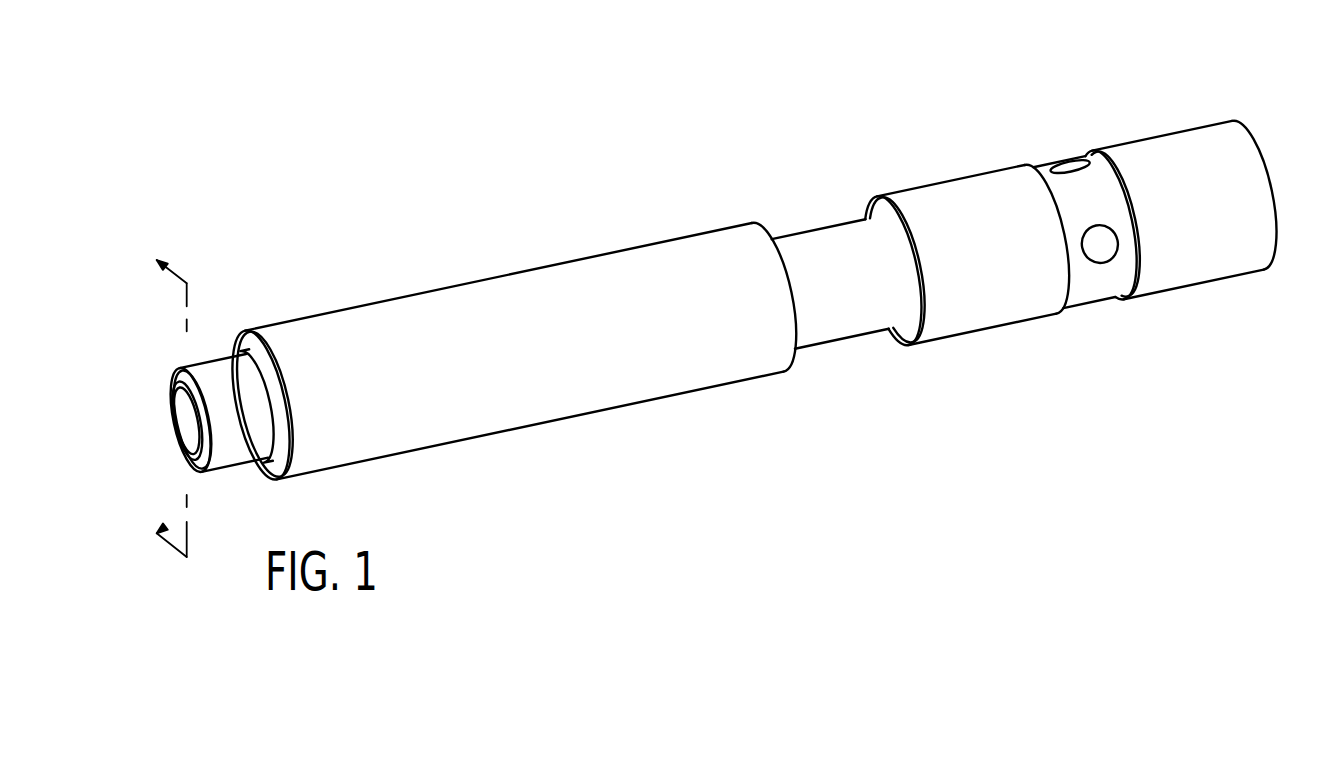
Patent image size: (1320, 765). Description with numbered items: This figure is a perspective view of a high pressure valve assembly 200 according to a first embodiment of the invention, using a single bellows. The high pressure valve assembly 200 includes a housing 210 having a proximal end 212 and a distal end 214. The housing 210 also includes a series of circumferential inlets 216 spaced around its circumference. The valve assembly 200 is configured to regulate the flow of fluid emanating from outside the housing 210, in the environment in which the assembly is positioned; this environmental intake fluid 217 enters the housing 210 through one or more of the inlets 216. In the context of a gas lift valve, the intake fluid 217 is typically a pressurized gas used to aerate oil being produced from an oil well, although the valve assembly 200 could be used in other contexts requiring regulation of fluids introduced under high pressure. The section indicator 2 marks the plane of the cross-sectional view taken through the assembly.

The section line 2- 2 is at (162, 397).
The high pressure valve assembly 200 is at (268, 267).
The housing 210 is at (588, 283).
The proximal end 212 is at (158, 370).
The distal end 214 is at (1248, 118).
The circumferential inlets 216 is at (1070, 163).
The environmental intake fluid 217 is at (1042, 148).